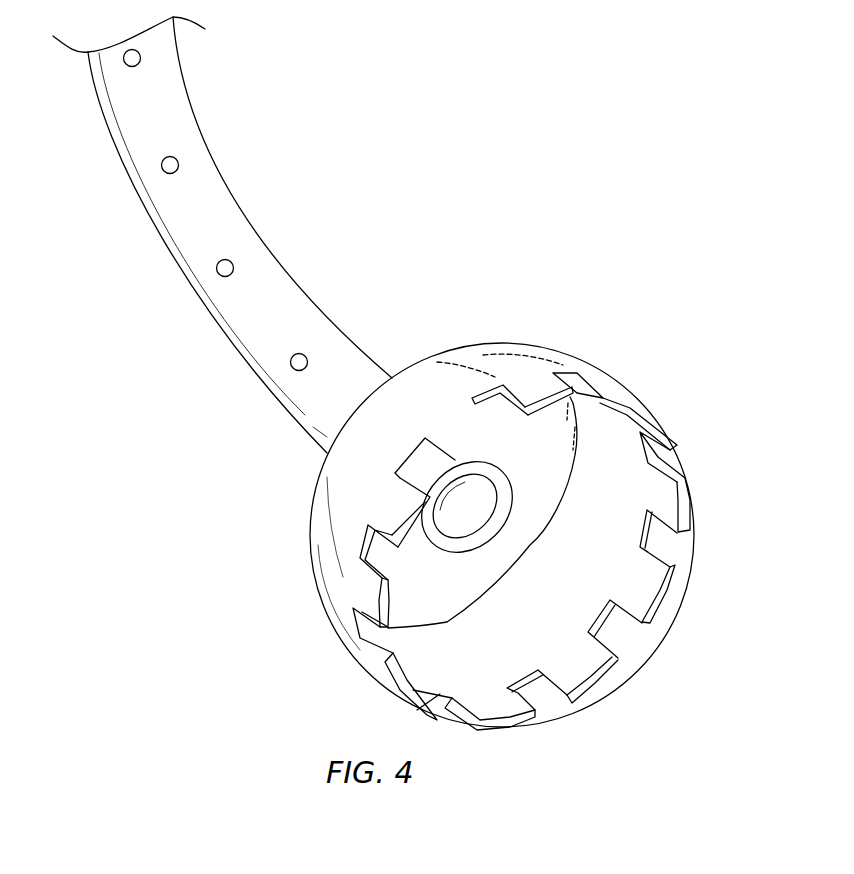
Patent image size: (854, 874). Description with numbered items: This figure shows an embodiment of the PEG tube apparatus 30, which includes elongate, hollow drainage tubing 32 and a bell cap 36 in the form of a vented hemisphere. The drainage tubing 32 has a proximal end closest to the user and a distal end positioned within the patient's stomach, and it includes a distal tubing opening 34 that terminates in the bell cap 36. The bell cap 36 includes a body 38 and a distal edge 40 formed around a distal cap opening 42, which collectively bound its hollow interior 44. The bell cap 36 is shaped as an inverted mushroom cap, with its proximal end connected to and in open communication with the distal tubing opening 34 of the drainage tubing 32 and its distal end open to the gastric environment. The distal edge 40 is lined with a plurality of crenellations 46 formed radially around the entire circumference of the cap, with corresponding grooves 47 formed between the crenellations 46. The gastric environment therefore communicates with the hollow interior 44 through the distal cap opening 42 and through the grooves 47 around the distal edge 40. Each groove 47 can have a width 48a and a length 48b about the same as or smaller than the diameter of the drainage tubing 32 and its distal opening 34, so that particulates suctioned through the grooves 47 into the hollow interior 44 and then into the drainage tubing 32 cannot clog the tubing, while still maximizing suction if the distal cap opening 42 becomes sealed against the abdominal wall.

The PEG tube apparatus 30 is at (397, 391).
The hollow drainage tubing 32 is at (163, 250).
The distal tubing opening 34 is at (460, 509).
The bell cap 36 is at (499, 535).
The body 38 is at (333, 568).
The distal edge 40 is at (407, 693).
The distal cap opening 42 is at (538, 569).
The hollow interior 44 is at (544, 461).
The crenellations 46 is at (665, 497).
The grooves 47 is at (680, 458).
The width 48a is at (668, 538).
The length 48b is at (612, 615).